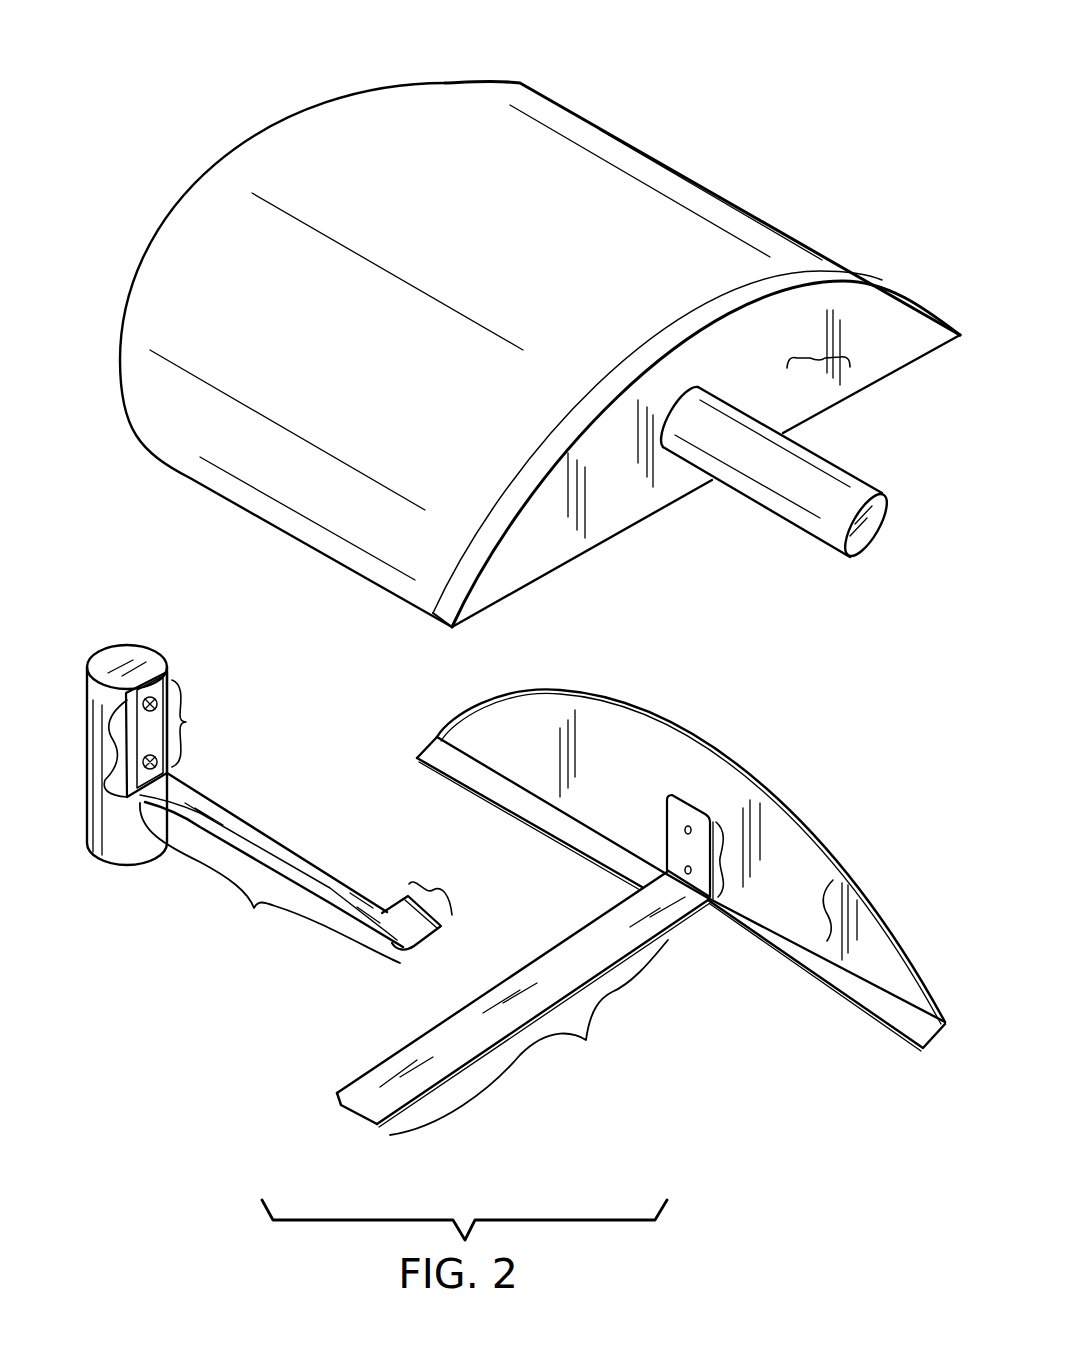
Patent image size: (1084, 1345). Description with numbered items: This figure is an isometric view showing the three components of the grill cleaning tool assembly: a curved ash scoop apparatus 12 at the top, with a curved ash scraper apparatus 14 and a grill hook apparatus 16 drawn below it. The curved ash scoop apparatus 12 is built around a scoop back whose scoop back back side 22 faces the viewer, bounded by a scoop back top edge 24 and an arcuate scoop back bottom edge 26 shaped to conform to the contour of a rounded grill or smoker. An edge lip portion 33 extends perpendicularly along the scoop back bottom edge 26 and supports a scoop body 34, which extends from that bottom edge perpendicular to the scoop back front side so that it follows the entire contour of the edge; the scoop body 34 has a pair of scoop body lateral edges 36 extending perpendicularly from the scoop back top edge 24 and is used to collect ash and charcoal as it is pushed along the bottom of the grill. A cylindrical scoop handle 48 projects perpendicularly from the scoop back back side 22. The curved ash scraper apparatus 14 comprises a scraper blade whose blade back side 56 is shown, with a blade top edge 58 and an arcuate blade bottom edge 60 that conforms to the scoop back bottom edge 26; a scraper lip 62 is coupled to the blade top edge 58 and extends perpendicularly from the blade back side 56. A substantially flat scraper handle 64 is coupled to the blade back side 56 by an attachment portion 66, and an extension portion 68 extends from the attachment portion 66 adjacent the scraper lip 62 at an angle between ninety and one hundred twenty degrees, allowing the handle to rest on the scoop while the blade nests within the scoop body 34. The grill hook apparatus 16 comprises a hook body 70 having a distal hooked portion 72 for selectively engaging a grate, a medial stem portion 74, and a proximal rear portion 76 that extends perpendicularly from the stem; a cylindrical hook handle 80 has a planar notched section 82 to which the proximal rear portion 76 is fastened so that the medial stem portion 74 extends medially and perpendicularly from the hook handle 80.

The curved ash scoop apparatus 12 is at (540, 323).
The scoop body 34 is at (478, 130).
The edge lip portion 33 is at (683, 335).
The scoop back bottom edge 26 is at (777, 295).
The scoop back back side 22 is at (821, 358).
The scoop back top edge 24 is at (850, 400).
The scoop body lateral edges 36 is at (313, 548).
The scoop handle 48 is at (793, 488).
The grill hook apparatus 16 is at (273, 850).
The hook handle 80 is at (107, 848).
The planar notched section 82 is at (113, 747).
The proximal rear portion 76 is at (183, 732).
The hook body 70 is at (207, 793).
The medial stem portion 74 is at (271, 879).
The distal hooked portion 72 is at (434, 890).
The curved ash scraper apparatus 14 is at (641, 921).
The blade bottom edge 60 is at (758, 779).
The blade back side 56 is at (828, 911).
The blade top edge 58 is at (885, 993).
The scraper lip 62 is at (852, 994).
The attachment portion 66 is at (723, 862).
The scraper handle 64 is at (562, 940).
The extension portion 68 is at (543, 1017).